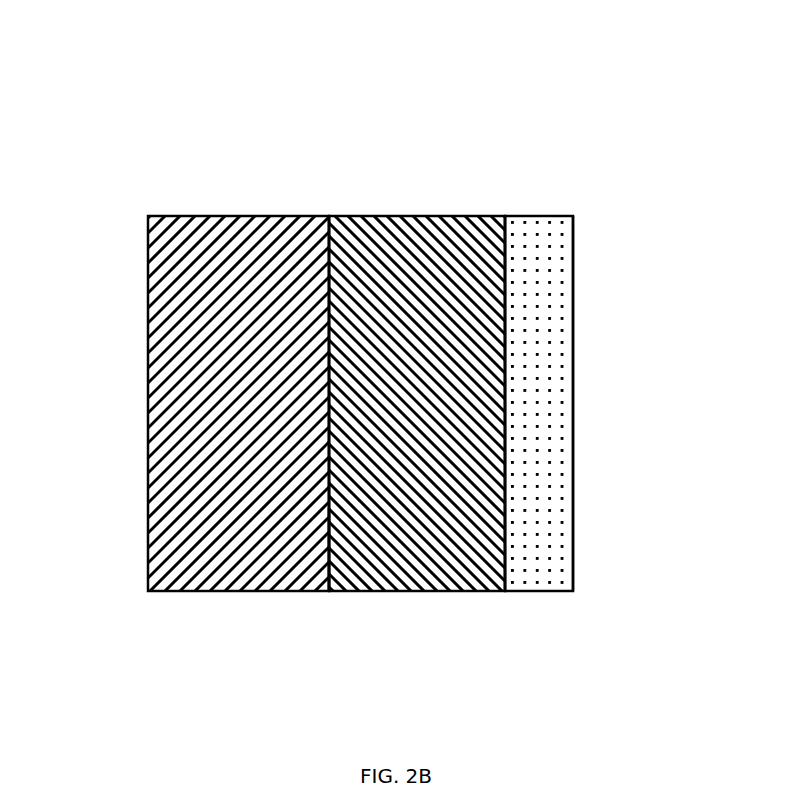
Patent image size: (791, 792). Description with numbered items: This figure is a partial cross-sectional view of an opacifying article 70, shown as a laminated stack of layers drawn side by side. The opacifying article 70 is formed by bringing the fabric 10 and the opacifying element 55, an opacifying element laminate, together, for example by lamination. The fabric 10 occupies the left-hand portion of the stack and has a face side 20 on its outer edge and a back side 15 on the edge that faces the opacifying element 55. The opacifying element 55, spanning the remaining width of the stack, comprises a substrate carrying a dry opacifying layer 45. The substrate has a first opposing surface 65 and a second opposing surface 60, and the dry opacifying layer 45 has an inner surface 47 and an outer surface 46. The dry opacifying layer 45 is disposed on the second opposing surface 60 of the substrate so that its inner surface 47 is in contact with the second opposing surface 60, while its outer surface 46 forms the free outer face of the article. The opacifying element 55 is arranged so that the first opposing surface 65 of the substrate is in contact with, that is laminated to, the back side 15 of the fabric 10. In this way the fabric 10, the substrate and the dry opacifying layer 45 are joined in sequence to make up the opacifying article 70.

The fabric 10 is at (164, 614).
The back side 15 is at (320, 516).
The face side 20 is at (133, 333).
The dry opacifying layer 45 is at (565, 365).
The outer surface 46 is at (565, 342).
The inner surface 47 is at (565, 534).
The opacifying element 55 is at (319, 192).
The second opposing surface 60 is at (492, 436).
The first opposing surface 65 is at (325, 548).
The opacifying article 70 is at (148, 137).